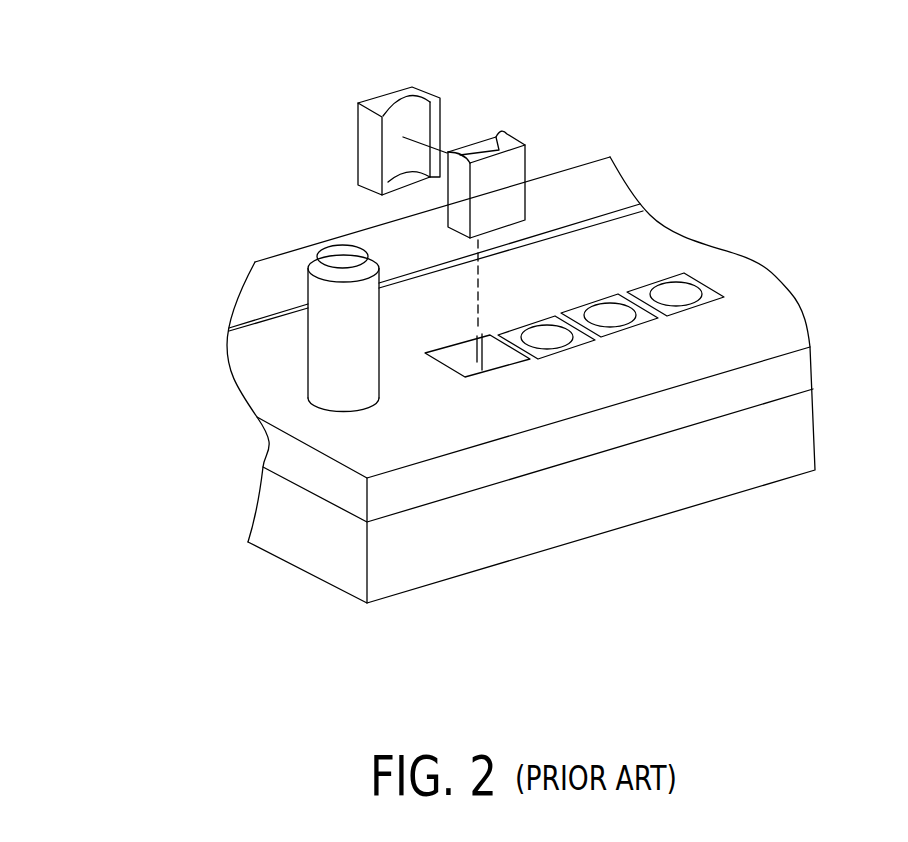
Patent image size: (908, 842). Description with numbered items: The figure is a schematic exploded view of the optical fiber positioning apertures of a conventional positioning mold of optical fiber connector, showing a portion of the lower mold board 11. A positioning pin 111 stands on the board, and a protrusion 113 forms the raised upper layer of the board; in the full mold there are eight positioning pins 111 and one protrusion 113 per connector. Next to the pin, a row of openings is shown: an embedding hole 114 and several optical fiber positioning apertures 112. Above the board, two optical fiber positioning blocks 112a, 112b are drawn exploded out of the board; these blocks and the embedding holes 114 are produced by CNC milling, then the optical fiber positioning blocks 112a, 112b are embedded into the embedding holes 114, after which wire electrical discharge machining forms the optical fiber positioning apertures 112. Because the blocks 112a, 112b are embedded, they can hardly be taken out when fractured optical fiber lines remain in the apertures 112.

The lower mold board 11 is at (270, 503).
The positioning pin 111 is at (322, 353).
The optical fiber positioning aperture 112 is at (550, 333).
The optical fiber positioning block 112a is at (436, 97).
The optical fiber positioning block 112b is at (497, 137).
The protrusion 113 is at (797, 367).
The embedding hole 114 is at (463, 357).